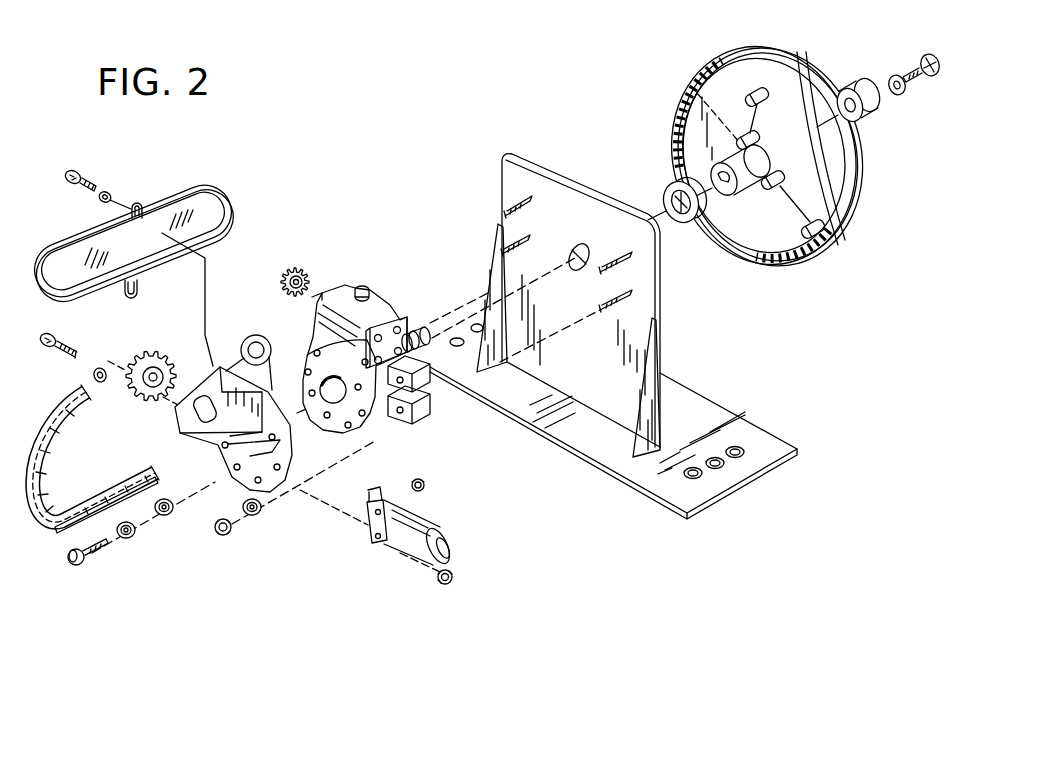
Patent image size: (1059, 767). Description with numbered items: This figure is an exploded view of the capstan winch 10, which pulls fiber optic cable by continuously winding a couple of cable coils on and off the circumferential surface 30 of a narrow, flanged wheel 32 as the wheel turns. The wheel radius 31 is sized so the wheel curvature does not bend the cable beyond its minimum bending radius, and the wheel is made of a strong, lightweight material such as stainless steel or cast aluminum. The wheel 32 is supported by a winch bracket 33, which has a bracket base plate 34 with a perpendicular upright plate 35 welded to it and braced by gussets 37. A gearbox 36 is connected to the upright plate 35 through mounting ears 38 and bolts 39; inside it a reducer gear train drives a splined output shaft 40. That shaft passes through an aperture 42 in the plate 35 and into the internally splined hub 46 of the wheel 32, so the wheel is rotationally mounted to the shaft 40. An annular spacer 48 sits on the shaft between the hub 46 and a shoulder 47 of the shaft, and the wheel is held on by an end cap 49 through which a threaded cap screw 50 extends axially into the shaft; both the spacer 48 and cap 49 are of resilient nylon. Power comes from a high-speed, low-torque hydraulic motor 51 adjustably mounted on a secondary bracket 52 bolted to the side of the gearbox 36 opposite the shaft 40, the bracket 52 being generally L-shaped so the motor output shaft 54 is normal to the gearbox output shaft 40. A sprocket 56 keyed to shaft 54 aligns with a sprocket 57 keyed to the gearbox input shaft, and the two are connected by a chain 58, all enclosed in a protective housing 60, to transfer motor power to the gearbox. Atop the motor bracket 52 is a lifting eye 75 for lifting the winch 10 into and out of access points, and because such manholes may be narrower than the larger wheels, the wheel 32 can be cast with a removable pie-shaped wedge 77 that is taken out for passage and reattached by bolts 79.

The winch 10 is at (348, 172).
The circumferential surface 30 is at (758, 62).
The wheel radius 31 is at (672, 110).
The wheel 32 is at (697, 64).
The winch bracket 33 is at (684, 338).
The bracket base plate 34 is at (780, 433).
The upright plate 35 is at (537, 167).
The gearbox 36 is at (353, 276).
The gussets 37 is at (648, 453).
The mounting ears 38 is at (410, 417).
The bolts 39 is at (80, 566).
The splined output shaft 40 is at (423, 330).
The aperture 42 is at (580, 244).
The internally splined hub 46 is at (740, 198).
The shoulder 47 is at (405, 332).
The annular spacer 48 is at (666, 184).
The end cap 49 is at (852, 82).
The threaded cap screw 50 is at (930, 54).
The hydraulic motor 51 is at (432, 523).
The secondary bracket 52 is at (238, 368).
The output shaft 54 is at (370, 528).
The sprocket 56 is at (163, 352).
The sprocket 57 is at (300, 267).
The chain 58 is at (55, 522).
The protective housing 60 is at (192, 190).
The lifting eye 75 is at (258, 335).
The removable pie-shaped wedge 77 is at (768, 225).
The bolts 79 is at (816, 138).